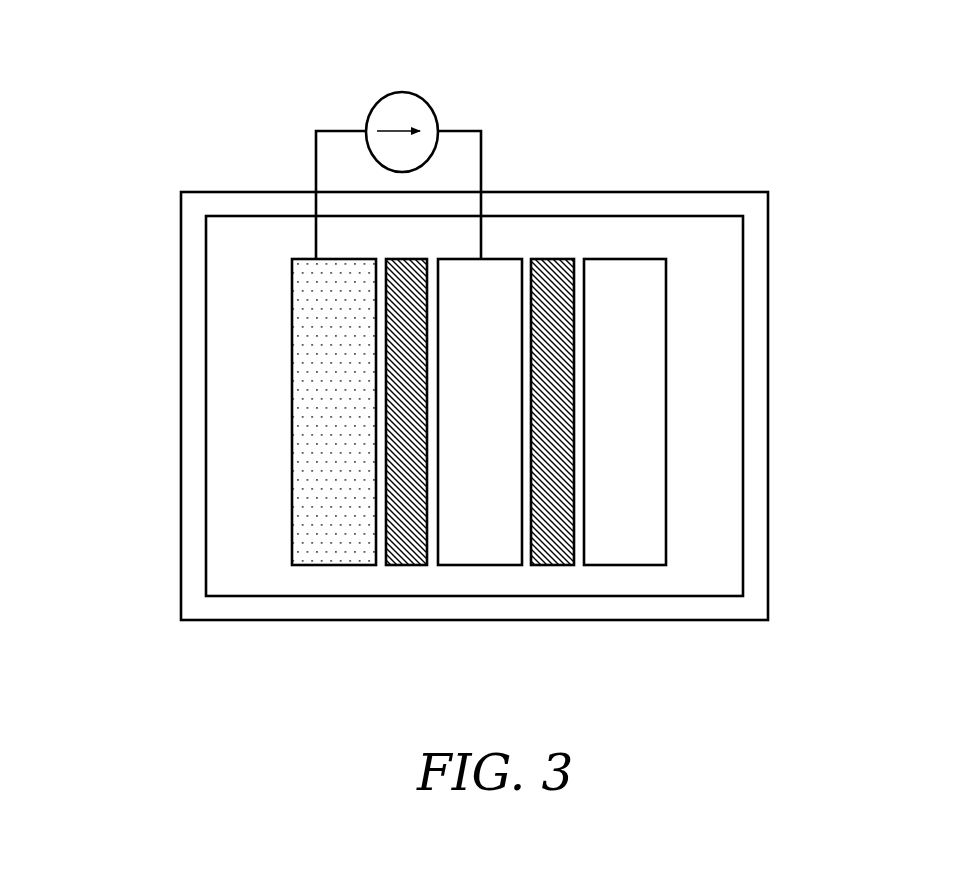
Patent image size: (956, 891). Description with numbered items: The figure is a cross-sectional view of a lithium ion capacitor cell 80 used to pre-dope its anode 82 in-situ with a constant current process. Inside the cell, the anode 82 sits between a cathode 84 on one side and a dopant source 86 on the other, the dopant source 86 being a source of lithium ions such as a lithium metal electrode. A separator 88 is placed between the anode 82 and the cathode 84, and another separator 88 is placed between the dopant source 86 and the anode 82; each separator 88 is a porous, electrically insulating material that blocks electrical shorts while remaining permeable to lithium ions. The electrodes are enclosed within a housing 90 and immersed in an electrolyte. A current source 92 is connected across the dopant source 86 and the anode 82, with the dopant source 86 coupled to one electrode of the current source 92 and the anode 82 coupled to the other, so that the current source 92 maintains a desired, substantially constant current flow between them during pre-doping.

The lithium ion capacitor cell 80 is at (145, 112).
The anode 82 is at (480, 550).
The cathode 84 is at (647, 382).
The dopant source 86 is at (310, 452).
The separator 88 is at (407, 555).
The housing 90 is at (197, 596).
The current source 92 is at (345, 105).